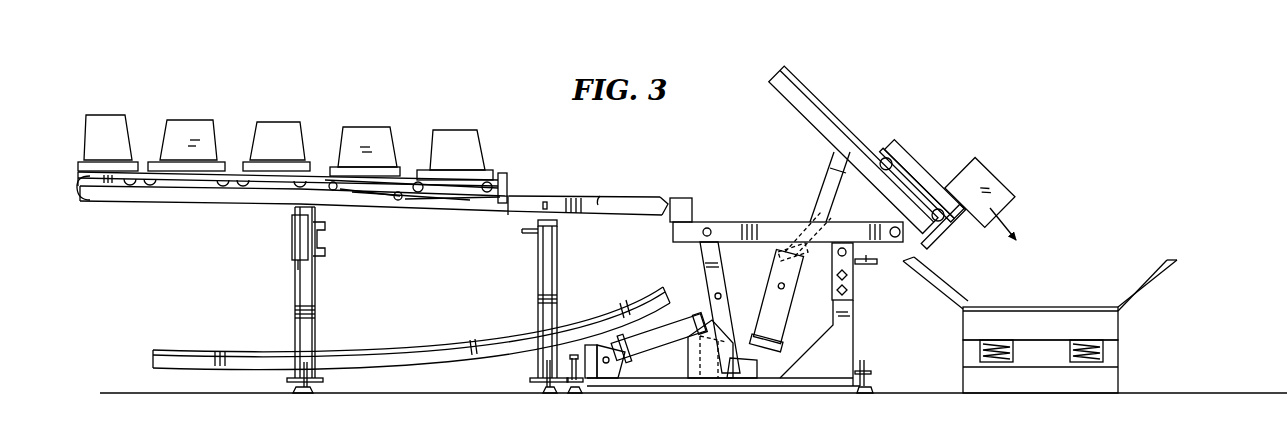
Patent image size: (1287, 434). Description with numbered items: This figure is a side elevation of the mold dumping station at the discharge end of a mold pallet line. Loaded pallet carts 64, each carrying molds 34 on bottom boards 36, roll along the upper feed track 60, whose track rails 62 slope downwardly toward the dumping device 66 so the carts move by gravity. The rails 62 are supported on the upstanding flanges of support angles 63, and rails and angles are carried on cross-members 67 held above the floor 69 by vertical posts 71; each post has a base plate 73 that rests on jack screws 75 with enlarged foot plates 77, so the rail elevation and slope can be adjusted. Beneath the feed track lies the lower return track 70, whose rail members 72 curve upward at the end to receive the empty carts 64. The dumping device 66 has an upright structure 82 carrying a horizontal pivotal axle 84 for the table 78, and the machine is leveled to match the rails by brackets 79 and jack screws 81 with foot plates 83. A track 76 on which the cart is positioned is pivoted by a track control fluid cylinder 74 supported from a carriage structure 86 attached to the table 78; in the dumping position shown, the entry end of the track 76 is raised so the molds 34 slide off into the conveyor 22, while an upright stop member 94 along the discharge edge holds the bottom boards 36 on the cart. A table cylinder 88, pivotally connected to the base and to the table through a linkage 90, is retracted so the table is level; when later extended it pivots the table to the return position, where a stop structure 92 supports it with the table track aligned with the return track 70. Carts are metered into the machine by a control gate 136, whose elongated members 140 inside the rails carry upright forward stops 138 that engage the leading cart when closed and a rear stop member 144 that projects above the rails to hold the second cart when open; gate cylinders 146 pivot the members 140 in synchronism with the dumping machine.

The conveyor 22 is at (1142, 328).
The molds 34 is at (106, 128).
The bottom boards 36 is at (133, 162).
The feed tracks 60 is at (93, 212).
The track rails 62 is at (570, 196).
The support angles 63 is at (76, 180).
The pallet carts 64 is at (113, 188).
The dumping device 66 is at (988, 134).
The cross-members 67 is at (552, 229).
The floor 69 is at (1186, 393).
The return track 70 is at (440, 366).
The vertical posts 71 is at (305, 305).
The rail members 72 is at (502, 346).
The base plate 73 is at (290, 378).
The track control fluid cylinder 74 is at (778, 320).
The jack screws 75 is at (318, 377).
The track 76 is at (823, 102).
The foot plates 77 is at (298, 394).
The table 78 is at (878, 238).
The brackets 79 is at (571, 388).
The jack screws 81 is at (574, 355).
The upright structure 82 is at (850, 316).
The foot plates 83 is at (586, 389).
The pivotal axle 84 is at (840, 245).
The carriage structure 86 is at (771, 243).
The table cylinder 88 is at (650, 348).
The linkage 90 is at (722, 256).
The stop structure 92 is at (705, 343).
The stop member 94 is at (963, 223).
The control gate 136 is at (440, 230).
The forward stops 138 is at (508, 173).
The elongated members 140 is at (472, 200).
The rear stop member 144 is at (336, 192).
The gate cylinders 146 is at (293, 248).